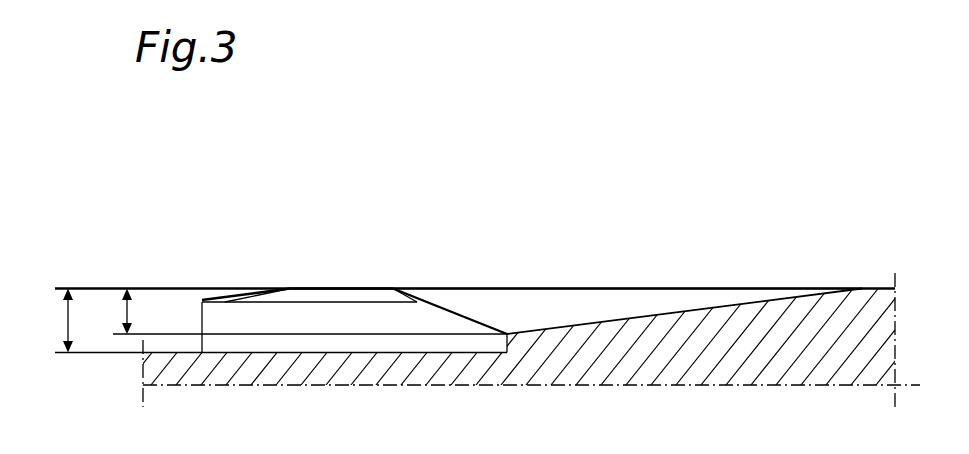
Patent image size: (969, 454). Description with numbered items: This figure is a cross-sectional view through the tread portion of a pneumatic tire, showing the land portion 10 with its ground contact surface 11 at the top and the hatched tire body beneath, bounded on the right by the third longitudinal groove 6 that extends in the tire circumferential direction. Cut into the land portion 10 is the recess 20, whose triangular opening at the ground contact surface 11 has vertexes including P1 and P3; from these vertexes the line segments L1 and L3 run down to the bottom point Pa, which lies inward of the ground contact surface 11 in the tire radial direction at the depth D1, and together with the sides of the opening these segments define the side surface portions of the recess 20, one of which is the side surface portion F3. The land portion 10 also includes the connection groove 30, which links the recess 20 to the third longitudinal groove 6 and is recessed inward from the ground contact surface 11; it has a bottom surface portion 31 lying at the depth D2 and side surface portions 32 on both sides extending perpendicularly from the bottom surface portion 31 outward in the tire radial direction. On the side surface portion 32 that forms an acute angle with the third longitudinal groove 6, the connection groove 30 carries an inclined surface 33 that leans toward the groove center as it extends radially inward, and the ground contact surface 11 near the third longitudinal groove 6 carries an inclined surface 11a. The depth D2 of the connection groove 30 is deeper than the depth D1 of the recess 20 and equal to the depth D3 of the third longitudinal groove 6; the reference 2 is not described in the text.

The vehicle body panel 2 is at (908, 322).
The third longitudinal groove 6 is at (163, 351).
The land portion 10 is at (805, 279).
The ground contact surface 11 is at (532, 287).
The inclined surface 11a is at (230, 298).
The recess 20 is at (712, 300).
The connection groove 30 is at (367, 343).
The bottom surface portion 31 is at (327, 351).
The side surface portions 32 is at (253, 312).
The inclined surface 33 is at (307, 298).
The vertex P1 is at (873, 277).
The vertex P3 is at (403, 279).
The bottom point Pa is at (513, 345).
The line segment L1 is at (635, 317).
The line segment L3 is at (452, 310).
The side surface portion F3 is at (577, 302).
The depth of the recess D1 is at (108, 312).
The depth of the connection groove D2 is at (80, 321).
The depth of the longitudinal groove D3 is at (35, 338).